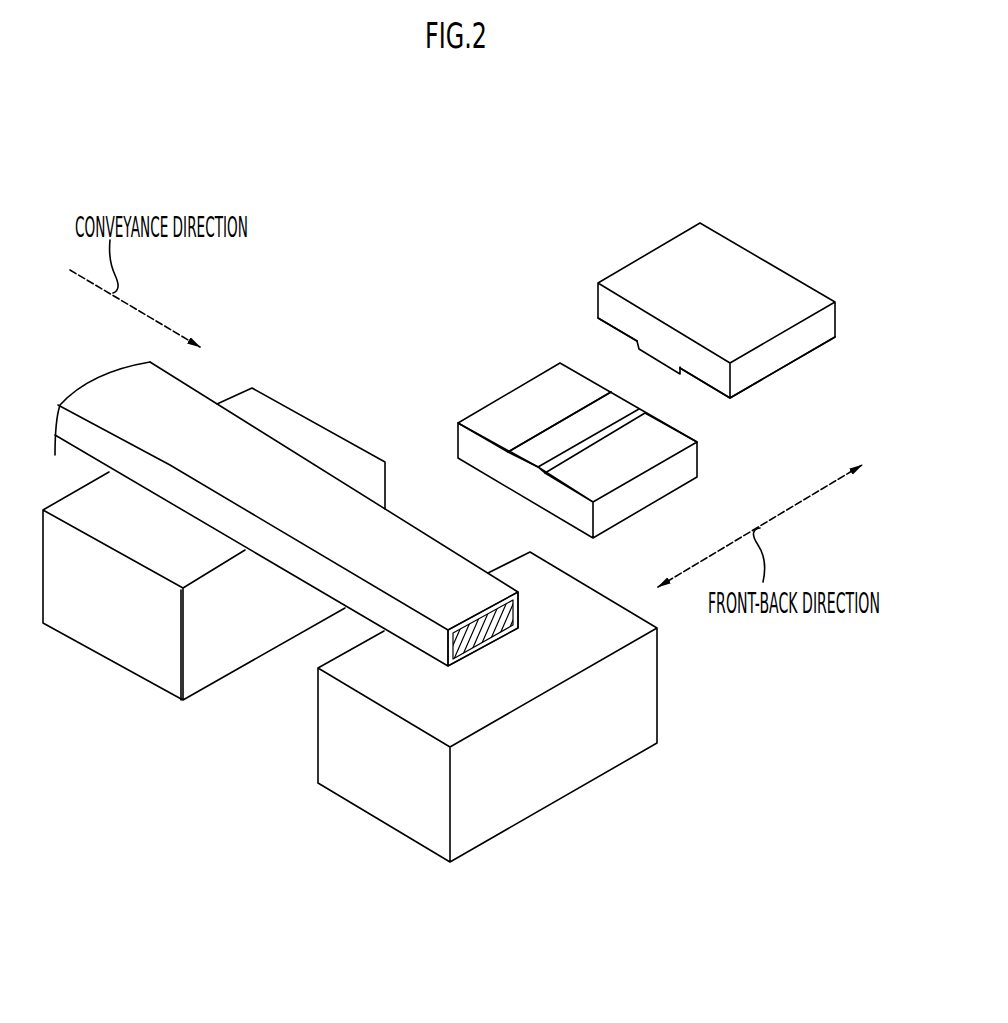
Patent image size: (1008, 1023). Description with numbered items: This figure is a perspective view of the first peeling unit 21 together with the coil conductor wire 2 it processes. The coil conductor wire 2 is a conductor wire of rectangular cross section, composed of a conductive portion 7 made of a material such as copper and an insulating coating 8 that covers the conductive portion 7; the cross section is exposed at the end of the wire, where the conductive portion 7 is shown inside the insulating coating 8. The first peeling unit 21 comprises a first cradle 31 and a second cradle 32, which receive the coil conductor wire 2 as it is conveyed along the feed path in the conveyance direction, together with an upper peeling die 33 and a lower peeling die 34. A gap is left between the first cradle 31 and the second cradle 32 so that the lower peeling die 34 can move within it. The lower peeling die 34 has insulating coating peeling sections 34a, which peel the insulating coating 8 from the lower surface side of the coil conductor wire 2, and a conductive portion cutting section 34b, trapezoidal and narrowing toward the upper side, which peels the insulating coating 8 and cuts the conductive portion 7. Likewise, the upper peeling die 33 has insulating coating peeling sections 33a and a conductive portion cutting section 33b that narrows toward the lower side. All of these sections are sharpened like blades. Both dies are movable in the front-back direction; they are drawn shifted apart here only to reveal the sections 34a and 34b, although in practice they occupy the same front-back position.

The coil conductor wire 2 is at (404, 516).
The conductive portion 7 is at (490, 606).
The insulating coating 8 is at (458, 562).
The first peeling unit 21 is at (343, 267).
The first cradle 31 is at (97, 636).
The second cradle 32 is at (381, 800).
The upper peeling die 33 is at (752, 267).
The insulating coating peeling section 33a is at (620, 334).
The conductive portion cutting section 33b is at (655, 368).
The lower peeling die 34 is at (520, 402).
The insulating coating peeling section 34a is at (477, 418).
The conductive portion cutting section 34b is at (573, 430).